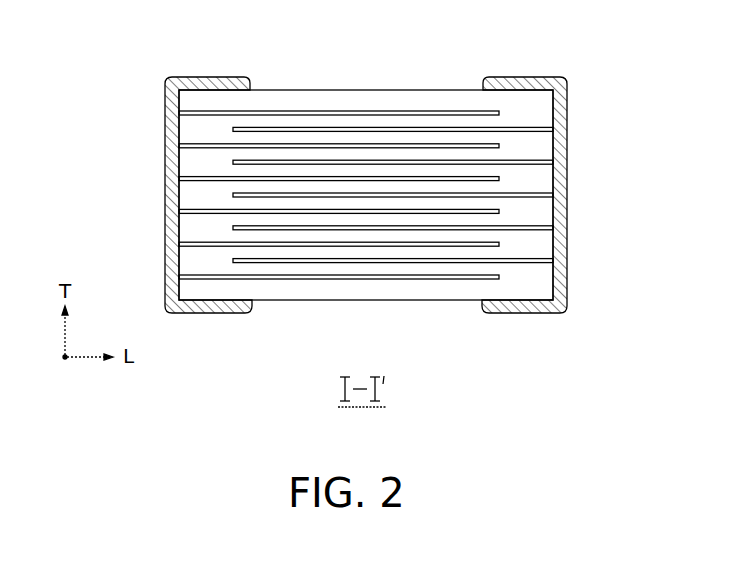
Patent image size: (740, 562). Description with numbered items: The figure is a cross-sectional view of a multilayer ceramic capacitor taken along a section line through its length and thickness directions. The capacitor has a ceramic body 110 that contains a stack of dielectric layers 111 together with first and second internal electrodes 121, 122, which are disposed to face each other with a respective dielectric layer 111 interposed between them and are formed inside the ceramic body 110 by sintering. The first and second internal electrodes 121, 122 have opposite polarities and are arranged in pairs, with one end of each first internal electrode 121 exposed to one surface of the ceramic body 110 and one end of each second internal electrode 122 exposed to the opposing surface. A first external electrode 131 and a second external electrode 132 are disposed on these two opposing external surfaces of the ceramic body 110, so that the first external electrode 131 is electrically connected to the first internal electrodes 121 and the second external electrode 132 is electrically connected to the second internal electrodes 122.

The ceramic body 110 is at (367, 89).
The dielectric layer 111 is at (203, 136).
The first internal electrode 121 is at (200, 112).
The second internal electrode 122 is at (242, 134).
The first external electrode 131 is at (206, 77).
The second external electrode 132 is at (526, 77).